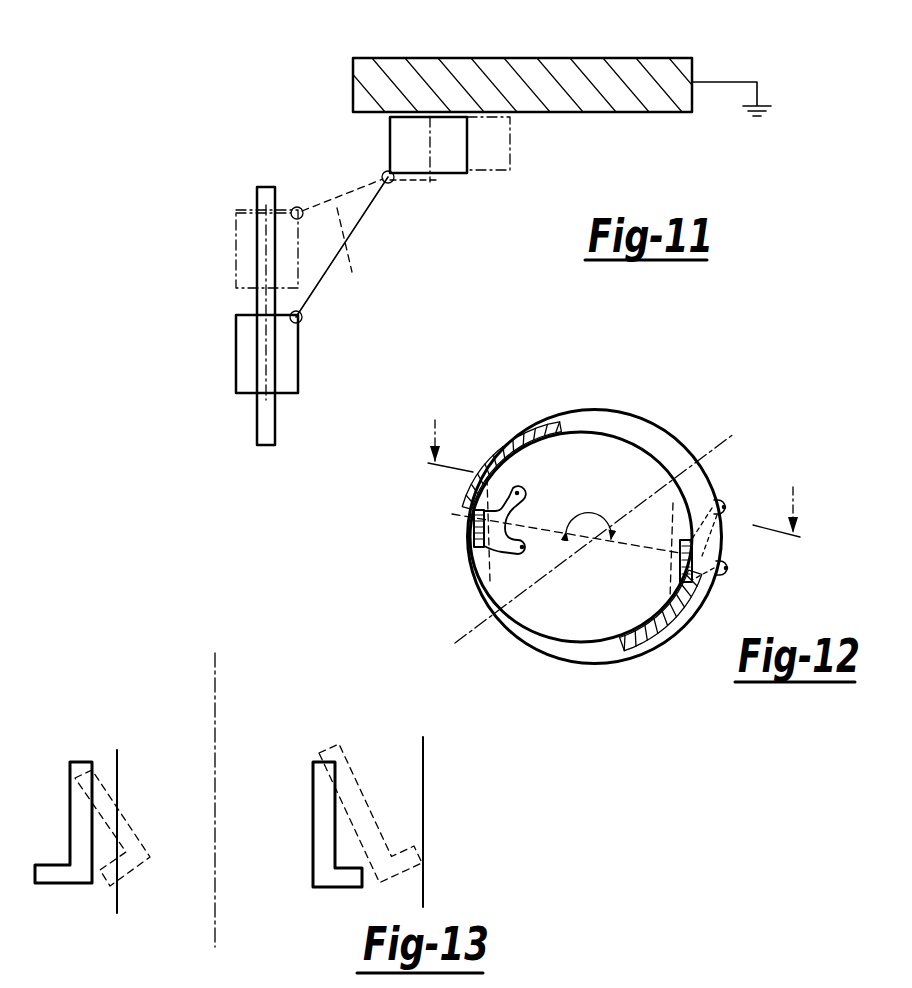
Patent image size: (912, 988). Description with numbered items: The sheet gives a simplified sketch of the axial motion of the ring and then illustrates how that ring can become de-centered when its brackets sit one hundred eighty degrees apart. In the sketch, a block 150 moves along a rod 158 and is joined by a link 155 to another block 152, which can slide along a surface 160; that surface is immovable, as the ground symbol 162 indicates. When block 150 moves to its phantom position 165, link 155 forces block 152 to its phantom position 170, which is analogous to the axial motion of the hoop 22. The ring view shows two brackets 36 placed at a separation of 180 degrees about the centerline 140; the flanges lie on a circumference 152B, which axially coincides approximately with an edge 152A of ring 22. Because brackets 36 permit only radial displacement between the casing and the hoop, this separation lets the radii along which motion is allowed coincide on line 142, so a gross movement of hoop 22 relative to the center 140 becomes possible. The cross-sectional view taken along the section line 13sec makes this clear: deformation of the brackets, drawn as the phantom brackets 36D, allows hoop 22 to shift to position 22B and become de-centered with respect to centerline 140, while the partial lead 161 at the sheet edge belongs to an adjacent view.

In FIG. 11, the surface 160 is at (540, 112).
In FIG. 11, the ground symbol 162 is at (731, 78).
In FIG. 11, the block 152 is at (410, 174).
In FIG. 11, the phantom position 170 is at (510, 168).
In FIG. 11, the phantom position 165 is at (288, 214).
In FIG. 11, the link 155 is at (328, 266).
In FIG. 11, the rod 158 is at (276, 433).
In FIG. 11, the block 150 is at (298, 357).
In FIG. 12, the ring 22 is at (625, 420).
In FIG. 12, the centerline 140 is at (713, 447).
In FIG. 13, the centerline 140 is at (217, 690).
In FIG. 12, the 180 degree separation 180 is at (593, 516).
In FIG. 12, the line 142 is at (622, 548).
In FIG. 12, the edge of ring 152A is at (541, 437).
In FIG. 12, the circumference 152B is at (690, 603).
In FIG. 12, the bracket 36 is at (524, 501).
In FIG. 13, the bracket 36 is at (70, 840).
In FIG. 12, the section line 13-13 13sec is at (630, 461).
In FIG. 13, the position of hoop 22B is at (118, 782).
In FIG. 13, the phantom bracket 36D is at (126, 820).
In FIG. 13, the lead 161 is at (660, 987).